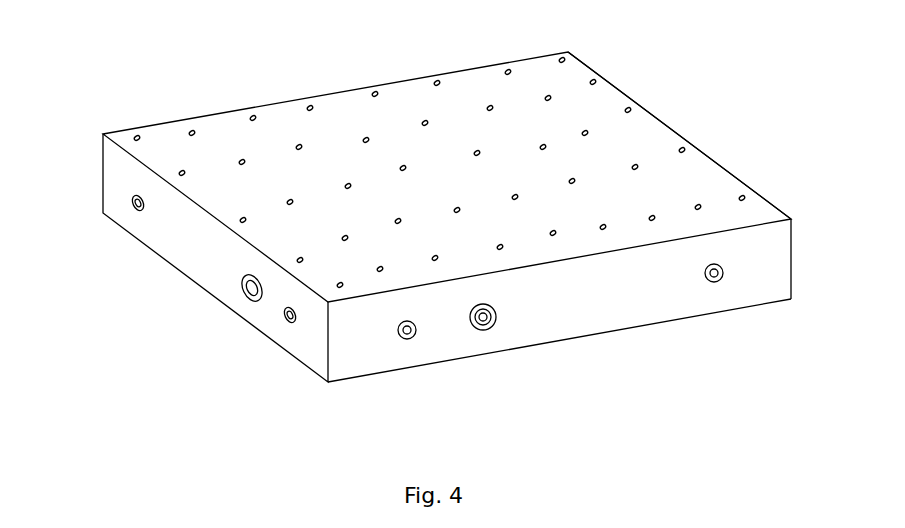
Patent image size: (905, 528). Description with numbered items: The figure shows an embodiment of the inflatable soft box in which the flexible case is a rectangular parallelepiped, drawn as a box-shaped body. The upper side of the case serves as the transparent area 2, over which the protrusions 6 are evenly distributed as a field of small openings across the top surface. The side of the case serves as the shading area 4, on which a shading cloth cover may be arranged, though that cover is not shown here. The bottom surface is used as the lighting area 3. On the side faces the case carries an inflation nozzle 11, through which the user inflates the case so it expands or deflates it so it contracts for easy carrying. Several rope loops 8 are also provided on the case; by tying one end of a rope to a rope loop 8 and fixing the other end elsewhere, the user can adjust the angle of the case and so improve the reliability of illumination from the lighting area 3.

The transparent area 2 is at (348, 105).
The lighting area 3 is at (581, 338).
The shading area 4 is at (778, 277).
The protrusions 6 is at (547, 102).
The rope loops 8 is at (131, 204).
The inflation nozzle 11 is at (242, 291).